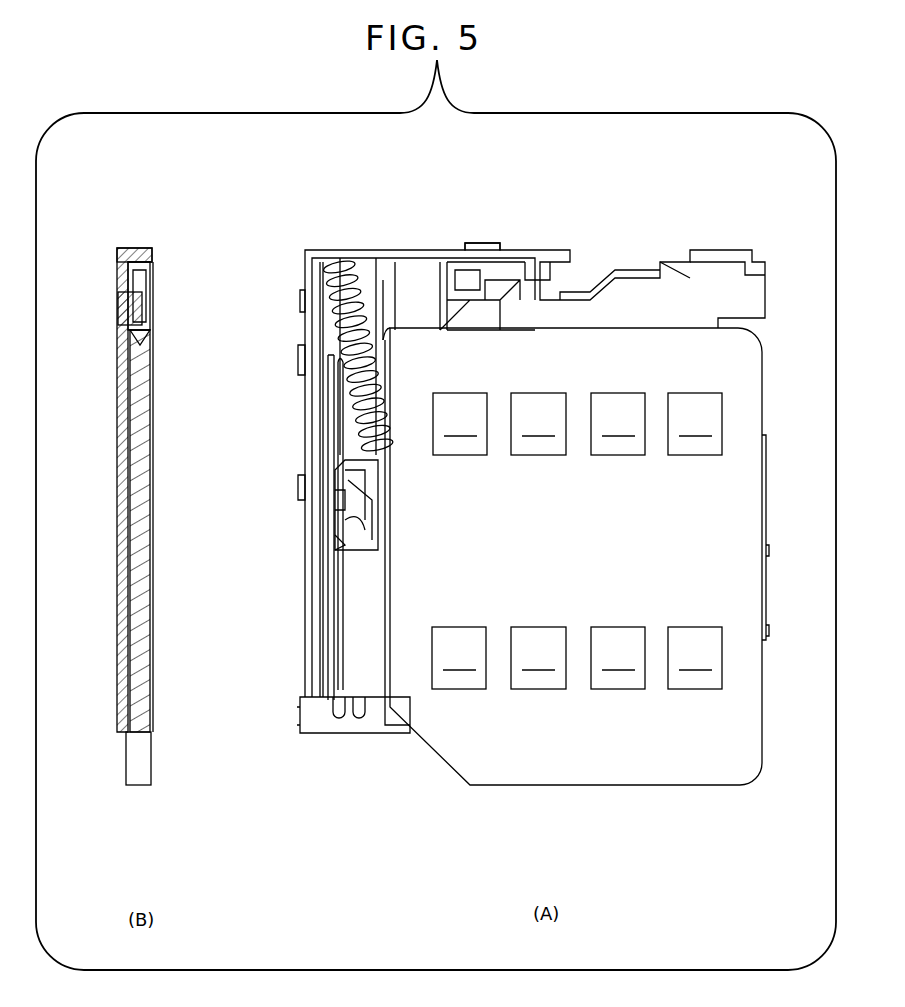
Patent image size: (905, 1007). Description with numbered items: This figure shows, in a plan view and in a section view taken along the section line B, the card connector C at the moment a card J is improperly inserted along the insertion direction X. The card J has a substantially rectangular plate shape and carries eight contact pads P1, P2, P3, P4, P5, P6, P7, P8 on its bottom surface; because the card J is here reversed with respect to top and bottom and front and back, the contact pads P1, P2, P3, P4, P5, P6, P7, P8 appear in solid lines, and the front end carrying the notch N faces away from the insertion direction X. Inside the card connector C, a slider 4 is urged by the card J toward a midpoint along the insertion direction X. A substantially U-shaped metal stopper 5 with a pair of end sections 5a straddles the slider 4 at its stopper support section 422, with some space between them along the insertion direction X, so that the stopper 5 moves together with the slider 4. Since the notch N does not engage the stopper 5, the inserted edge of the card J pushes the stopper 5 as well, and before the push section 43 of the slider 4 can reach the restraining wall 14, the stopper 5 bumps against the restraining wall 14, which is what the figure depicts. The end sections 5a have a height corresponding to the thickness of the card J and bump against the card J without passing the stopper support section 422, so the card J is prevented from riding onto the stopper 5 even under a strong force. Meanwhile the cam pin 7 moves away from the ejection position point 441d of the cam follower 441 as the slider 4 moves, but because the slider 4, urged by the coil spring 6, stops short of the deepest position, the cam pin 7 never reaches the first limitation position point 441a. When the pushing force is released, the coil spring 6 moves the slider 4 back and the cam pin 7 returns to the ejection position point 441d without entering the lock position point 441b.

In FIG. 5A, the slider 4 is at (360, 262).
In FIG. 5B, the slider 4 is at (117, 372).
In FIG. 5A, the stopper 5 is at (408, 270).
In FIG. 5B, the stopper 5 is at (140, 283).
In FIG. 5A, the end section 5a is at (342, 300).
In FIG. 5B, the end section 5a is at (143, 345).
In FIG. 5A, the coil spring 6 is at (318, 345).
In FIG. 5A, the cam pin 7 is at (330, 608).
In FIG. 5A, the restraining wall 14 is at (425, 258).
In FIG. 5B, the restraining wall 14 is at (152, 256).
In FIG. 5A, the push section 43 is at (480, 275).
In FIG. 5A, the cam follower 441 is at (328, 455).
In FIG. 5A, the first limitation position point 441a is at (320, 540).
In FIG. 5A, the lock position point 441b is at (328, 512).
In FIG. 5A, the ejection position point 441d is at (305, 362).
In FIG. 5B, the stopper support section 422 is at (120, 300).
In FIG. 5A, the card J is at (765, 390).
In FIG. 5B, the card J is at (153, 395).
In FIG. 5A, the notch N is at (432, 760).
In FIG. 5B, the notch N is at (135, 768).
In FIG. 5A, the card connector C is at (546, 208).
In FIG. 5B, the card connector C is at (131, 240).
In FIG. 5A, the section line B is at (413, 200).
In FIG. 5A, the insertion direction X is at (579, 808).
In FIG. 5A, the contact pad P1 is at (459, 658).
In FIG. 5A, the contact pad P2 is at (538, 658).
In FIG. 5A, the contact pad P3 is at (618, 658).
In FIG. 5A, the contact pad P4 is at (695, 658).
In FIG. 5A, the contact pad P5 is at (460, 424).
In FIG. 5A, the contact pad P6 is at (538, 424).
In FIG. 5A, the contact pad P7 is at (618, 424).
In FIG. 5A, the contact pad P8 is at (695, 424).